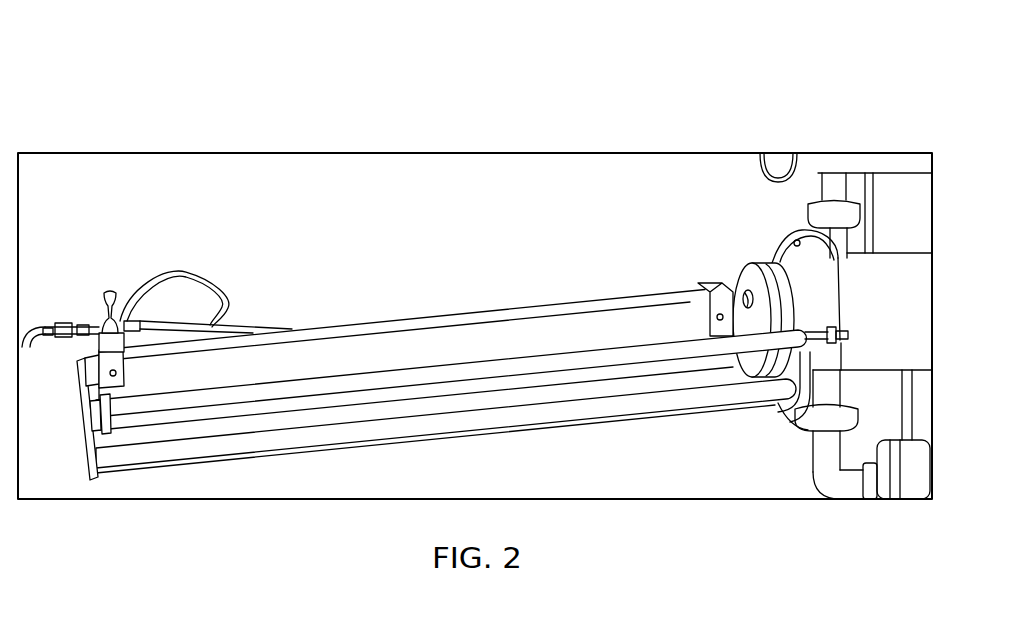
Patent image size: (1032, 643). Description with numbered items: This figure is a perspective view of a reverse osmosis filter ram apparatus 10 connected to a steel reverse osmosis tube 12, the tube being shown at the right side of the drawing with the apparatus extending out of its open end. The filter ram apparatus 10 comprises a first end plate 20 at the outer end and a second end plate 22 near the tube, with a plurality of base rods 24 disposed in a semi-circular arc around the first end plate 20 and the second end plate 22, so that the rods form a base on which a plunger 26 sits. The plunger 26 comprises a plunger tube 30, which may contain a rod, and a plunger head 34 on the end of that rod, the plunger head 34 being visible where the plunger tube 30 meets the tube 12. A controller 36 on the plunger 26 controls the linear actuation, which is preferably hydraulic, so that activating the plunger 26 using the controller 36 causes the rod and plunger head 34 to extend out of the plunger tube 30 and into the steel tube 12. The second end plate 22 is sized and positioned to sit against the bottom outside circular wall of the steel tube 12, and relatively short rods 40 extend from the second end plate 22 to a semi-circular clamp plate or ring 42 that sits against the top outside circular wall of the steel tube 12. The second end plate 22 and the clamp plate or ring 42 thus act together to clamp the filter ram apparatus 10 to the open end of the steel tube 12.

The reverse osmosis filter ram apparatus 10 is at (162, 85).
The steel reverse osmosis tube 12 is at (885, 292).
The first end plate 20 is at (88, 450).
The second end plate 22 is at (767, 407).
The base rods 24 is at (203, 402).
The plunger 26 is at (308, 357).
The plunger tube 30 is at (512, 335).
The plunger head 34 is at (760, 266).
The controller 36 is at (103, 293).
The short rods 40 is at (827, 343).
The clamp plate or ring 42 is at (800, 273).